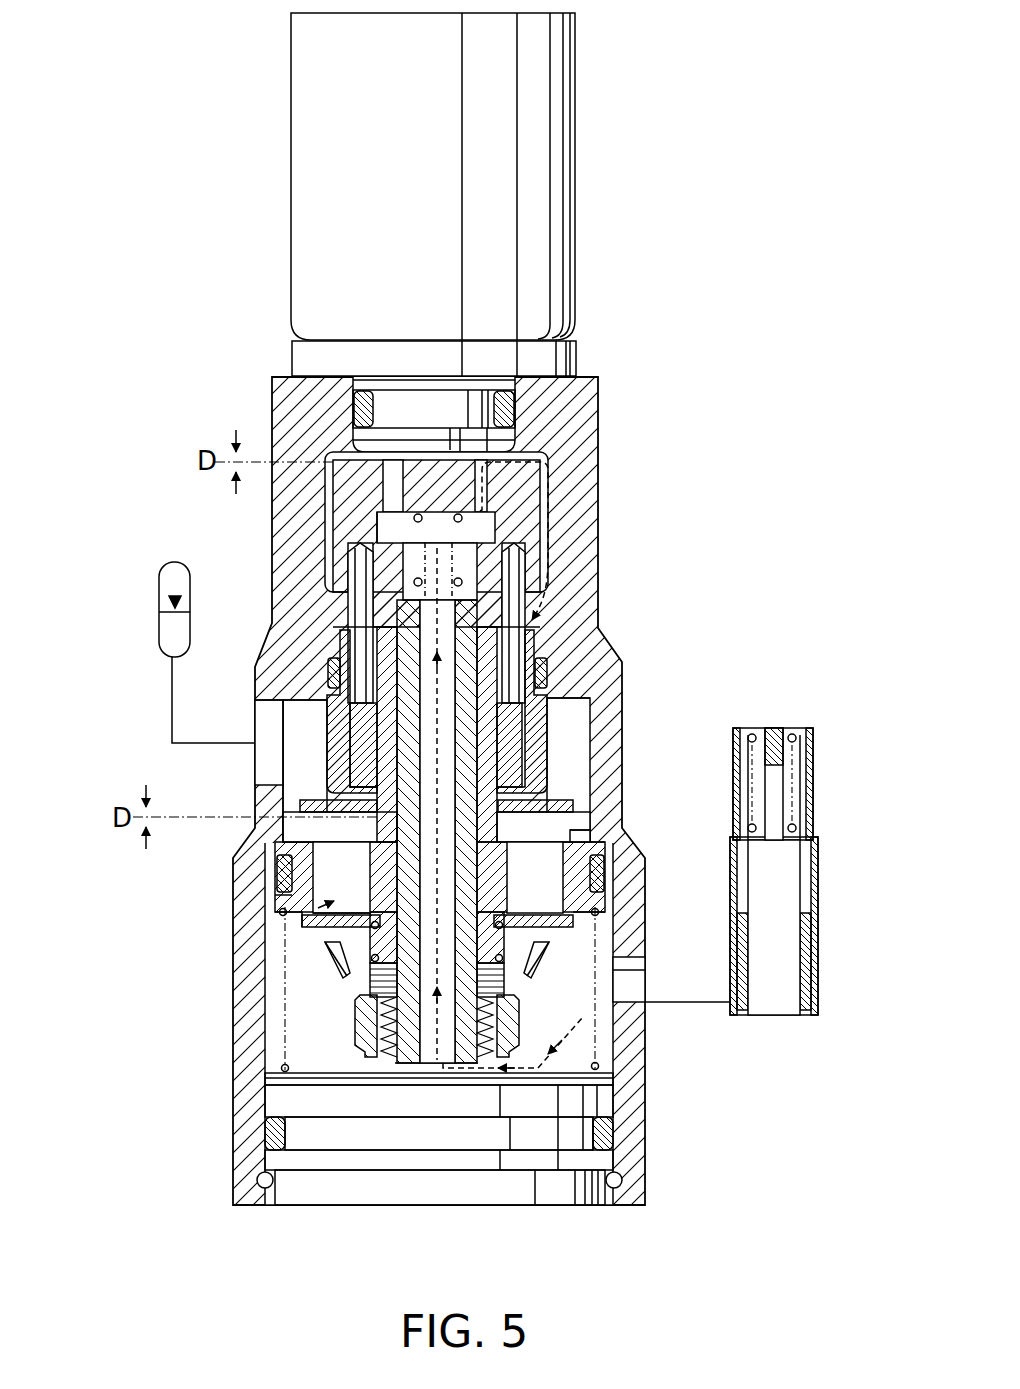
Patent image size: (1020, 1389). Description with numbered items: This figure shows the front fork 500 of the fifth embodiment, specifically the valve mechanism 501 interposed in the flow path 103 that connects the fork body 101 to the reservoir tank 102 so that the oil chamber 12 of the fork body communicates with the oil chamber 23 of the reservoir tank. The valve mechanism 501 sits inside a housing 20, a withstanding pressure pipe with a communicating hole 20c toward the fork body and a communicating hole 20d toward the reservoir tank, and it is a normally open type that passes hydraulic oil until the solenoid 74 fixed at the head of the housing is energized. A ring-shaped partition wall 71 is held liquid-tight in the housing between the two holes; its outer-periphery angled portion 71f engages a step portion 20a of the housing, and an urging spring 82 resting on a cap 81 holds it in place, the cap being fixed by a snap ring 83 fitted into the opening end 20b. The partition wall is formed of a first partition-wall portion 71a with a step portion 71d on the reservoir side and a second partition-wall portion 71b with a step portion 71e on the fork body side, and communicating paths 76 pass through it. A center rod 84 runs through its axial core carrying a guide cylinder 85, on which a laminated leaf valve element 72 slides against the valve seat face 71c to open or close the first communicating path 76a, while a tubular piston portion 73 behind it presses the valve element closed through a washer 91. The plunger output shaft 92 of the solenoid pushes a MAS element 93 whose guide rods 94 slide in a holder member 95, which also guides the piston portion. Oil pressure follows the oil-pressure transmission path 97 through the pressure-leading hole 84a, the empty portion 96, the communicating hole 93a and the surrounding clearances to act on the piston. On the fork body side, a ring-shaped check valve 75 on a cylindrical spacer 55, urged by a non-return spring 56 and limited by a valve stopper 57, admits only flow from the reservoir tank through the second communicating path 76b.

The front fork 500 is at (777, 198).
The valve mechanism 501 is at (627, 358).
The solenoid 74 is at (578, 183).
The housing 20 is at (580, 420).
The step portion 20a is at (283, 835).
The opening end 20b is at (245, 1205).
The communicating hole 20c is at (640, 1030).
The communicating hole 20d is at (262, 740).
The output shaft 92 is at (410, 462).
The MAS element 93 is at (513, 515).
The communicating hole 93a is at (487, 475).
The empty portion 96 is at (385, 522).
The oil-pressure transmission path 97 is at (548, 548).
The guide rods 94 is at (525, 590).
The holder member 95 is at (548, 668).
The piston portion 73 is at (545, 712).
The guide cylinder 85 is at (510, 763).
The washer 91 is at (348, 775).
The valve element 72 is at (320, 806).
The partition wall 71 is at (300, 920).
The first partition-wall portion 71a is at (580, 905).
The second partition-wall portion 71b is at (282, 898).
The valve seat face 71c is at (590, 835).
The step portion 71d is at (585, 848).
The step portion 71e is at (290, 925).
The outer-periphery angled portion 71f is at (282, 866).
The communicating paths 76 is at (335, 960).
The first communicating path 76a is at (553, 871).
The second communicating path 76b is at (357, 891).
The check valve 75 is at (560, 933).
The cylindrical spacer 55 is at (540, 965).
The non-return spring 56 is at (345, 965).
The valve stopper 57 is at (360, 1005).
The center rod 84 is at (410, 1065).
The pressure-leading hole 84a is at (432, 1065).
The urging spring 82 is at (275, 1130).
The cap 81 is at (312, 1205).
The snap ring 83 is at (257, 1180).
The oil chamber 23 is at (175, 631).
The reservoir tank 102 is at (154, 546).
The flow path 103 is at (172, 715).
The fork body 101 is at (839, 719).
The oil chamber 12 is at (800, 820).